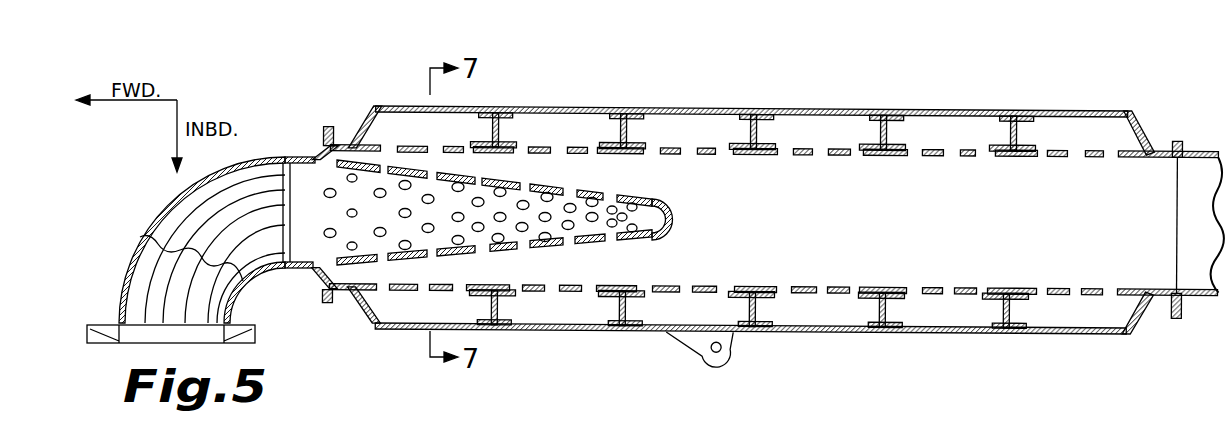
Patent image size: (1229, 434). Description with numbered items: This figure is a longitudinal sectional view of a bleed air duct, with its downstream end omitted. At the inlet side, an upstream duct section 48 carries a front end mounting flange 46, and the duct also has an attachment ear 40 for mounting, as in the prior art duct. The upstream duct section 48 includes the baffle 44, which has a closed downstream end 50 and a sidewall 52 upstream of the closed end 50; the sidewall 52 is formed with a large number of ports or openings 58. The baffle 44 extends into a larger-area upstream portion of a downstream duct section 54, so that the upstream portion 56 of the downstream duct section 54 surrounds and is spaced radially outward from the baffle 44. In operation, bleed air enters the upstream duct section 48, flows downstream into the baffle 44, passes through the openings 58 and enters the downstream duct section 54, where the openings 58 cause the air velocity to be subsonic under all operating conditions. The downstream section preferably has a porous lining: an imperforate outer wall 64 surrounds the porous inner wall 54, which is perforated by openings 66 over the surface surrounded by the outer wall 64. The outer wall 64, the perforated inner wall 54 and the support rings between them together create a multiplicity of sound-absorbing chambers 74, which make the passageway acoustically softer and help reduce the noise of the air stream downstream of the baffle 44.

The attachment ear 40 is at (700, 340).
The baffle 44 is at (630, 176).
The front end mounting flange 46 is at (103, 342).
The upstream duct section 48 is at (138, 265).
The closed downstream end 50 is at (662, 216).
The sidewall 52 is at (553, 184).
The downstream duct section 54 is at (1060, 293).
The upstream portion 56 is at (567, 312).
The openings 58 is at (378, 237).
The outer wall 64 is at (872, 333).
The openings 66 is at (433, 152).
The sound-absorbing chambers 74 is at (396, 122).